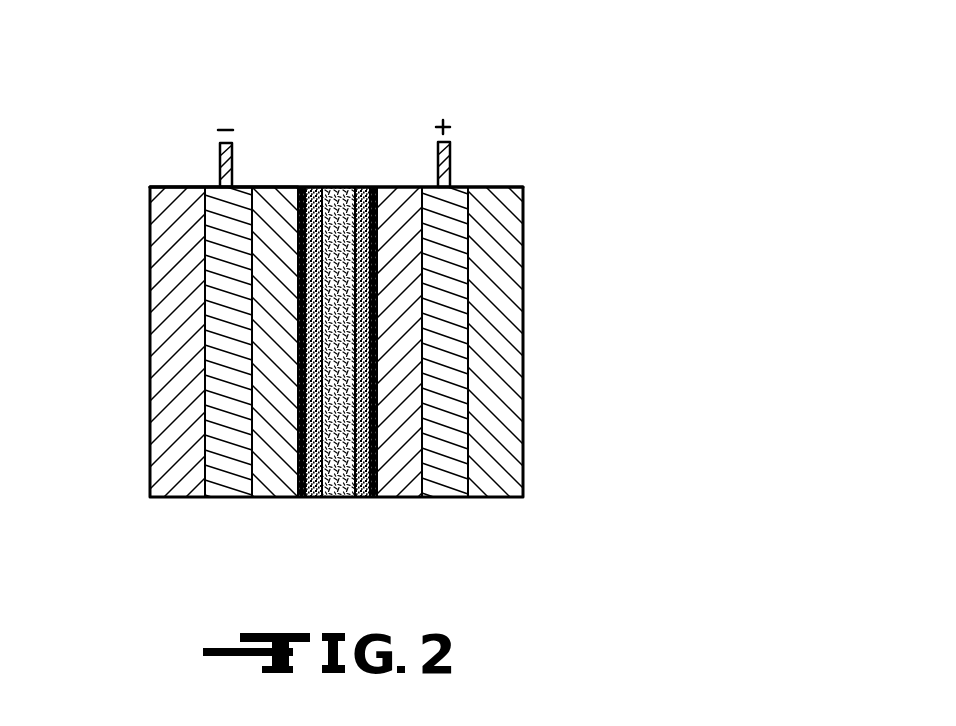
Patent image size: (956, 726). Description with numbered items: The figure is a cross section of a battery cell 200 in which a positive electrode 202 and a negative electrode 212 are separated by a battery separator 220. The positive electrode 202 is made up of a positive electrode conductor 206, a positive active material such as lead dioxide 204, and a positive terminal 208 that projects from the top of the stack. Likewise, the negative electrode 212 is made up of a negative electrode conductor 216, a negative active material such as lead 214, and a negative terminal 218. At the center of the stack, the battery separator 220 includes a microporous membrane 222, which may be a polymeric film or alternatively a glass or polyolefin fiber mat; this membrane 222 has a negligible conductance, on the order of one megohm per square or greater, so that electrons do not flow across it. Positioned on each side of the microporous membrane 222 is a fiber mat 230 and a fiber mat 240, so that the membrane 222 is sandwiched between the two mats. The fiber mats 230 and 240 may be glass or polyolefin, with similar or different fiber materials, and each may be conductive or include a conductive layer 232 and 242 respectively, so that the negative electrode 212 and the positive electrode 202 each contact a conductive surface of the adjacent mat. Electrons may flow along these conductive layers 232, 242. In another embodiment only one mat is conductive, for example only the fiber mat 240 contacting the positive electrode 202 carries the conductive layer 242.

The cell 200 is at (601, 197).
The positive electrode 202 is at (501, 74).
The lead dioxide 204 is at (483, 537).
The positive electrode conductor 206 is at (468, 368).
The positive terminal 208 is at (450, 162).
The negative electrode 212 is at (203, 101).
The lead 214 is at (205, 528).
The negative electrode conductor 216 is at (200, 383).
The negative terminal 218 is at (220, 165).
The battery separator 220 is at (342, 497).
The microporous membrane 222 is at (327, 497).
The fiber mat 230 is at (313, 187).
The conductive layer 232 is at (302, 187).
The fiber mat 240 is at (358, 187).
The conductive layer 242 is at (372, 187).